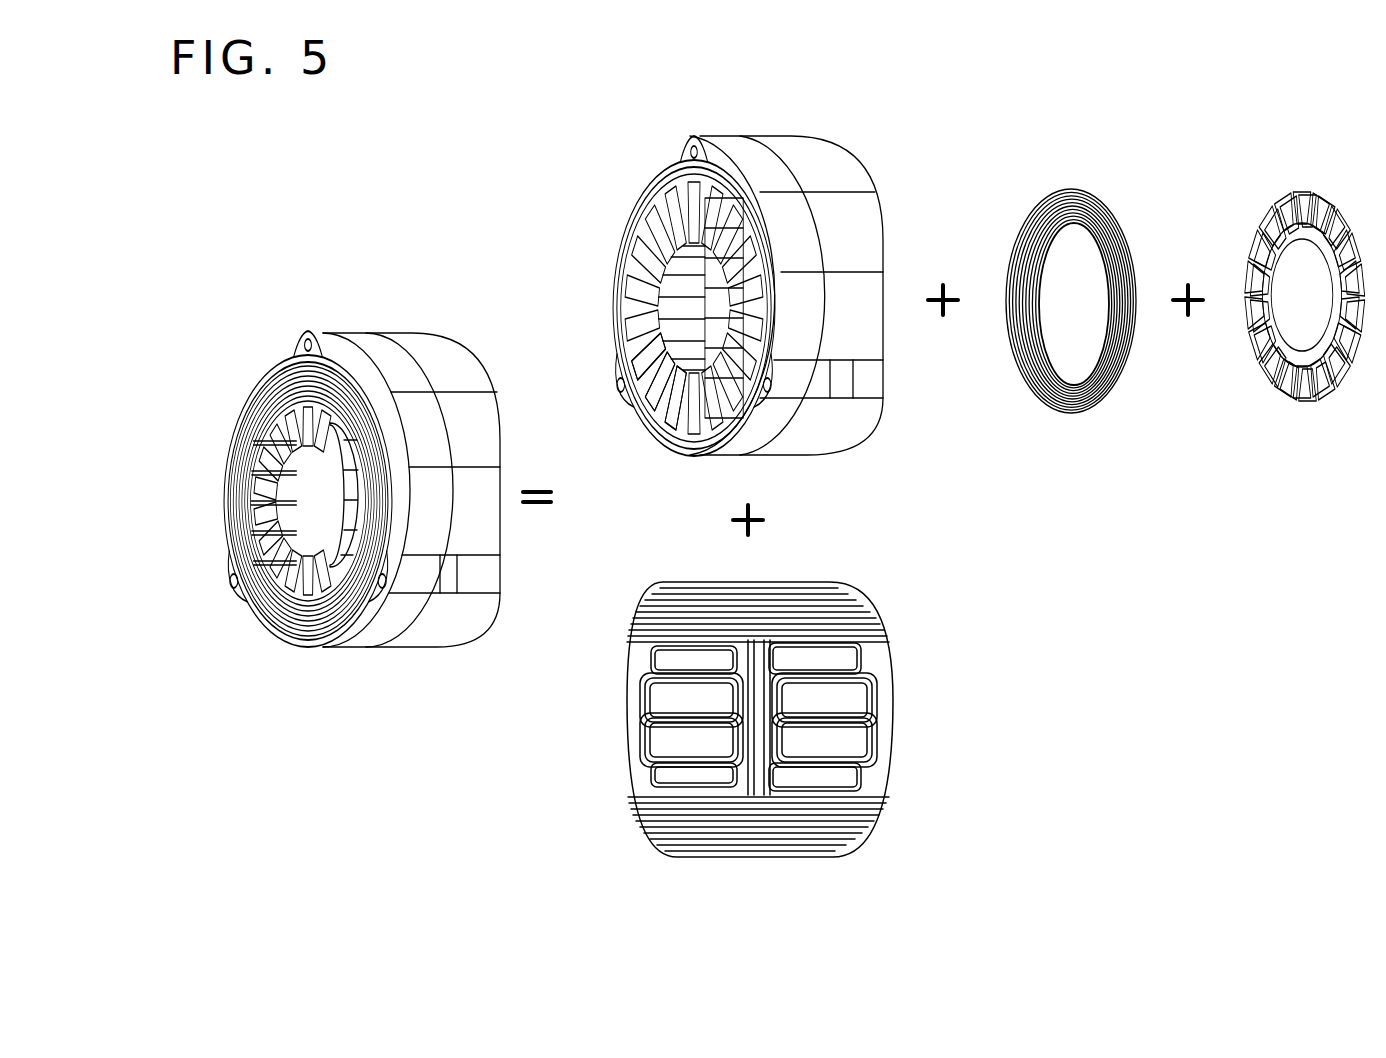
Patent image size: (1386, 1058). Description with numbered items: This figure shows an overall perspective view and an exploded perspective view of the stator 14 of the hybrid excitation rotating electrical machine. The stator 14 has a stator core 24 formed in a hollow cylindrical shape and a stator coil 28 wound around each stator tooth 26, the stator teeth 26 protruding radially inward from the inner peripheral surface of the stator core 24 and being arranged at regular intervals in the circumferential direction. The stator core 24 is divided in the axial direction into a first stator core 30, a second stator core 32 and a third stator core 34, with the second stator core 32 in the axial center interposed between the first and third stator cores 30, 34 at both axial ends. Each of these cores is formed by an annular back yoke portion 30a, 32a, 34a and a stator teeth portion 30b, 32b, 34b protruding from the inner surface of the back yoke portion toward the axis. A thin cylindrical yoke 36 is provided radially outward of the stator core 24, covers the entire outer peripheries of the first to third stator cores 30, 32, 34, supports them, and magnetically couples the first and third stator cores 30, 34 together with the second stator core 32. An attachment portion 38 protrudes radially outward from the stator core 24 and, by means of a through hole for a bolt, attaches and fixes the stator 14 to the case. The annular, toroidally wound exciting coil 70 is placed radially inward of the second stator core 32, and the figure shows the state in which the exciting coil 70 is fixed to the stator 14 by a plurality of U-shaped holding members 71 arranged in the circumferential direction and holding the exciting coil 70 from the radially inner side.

The stator 14 is at (360, 313).
The stator core 24 is at (624, 198).
The stator tooth 26 is at (668, 182).
The stator coil 28 is at (343, 613).
The first stator core 30 is at (580, 420).
The back yoke portion 30a is at (672, 410).
The stator teeth portion 30b is at (678, 415).
The second stator core 32 is at (536, 268).
The back yoke portion 32a is at (663, 310).
The stator teeth portion 32b is at (690, 290).
The third stator core 34 is at (940, 183).
The back yoke portion 34a is at (753, 262).
The stator teeth portion 34b is at (730, 292).
The yoke 36 is at (443, 377).
The attachment portion 38 is at (302, 355).
The exciting coil 70 is at (300, 580).
The holding member 71 is at (303, 490).